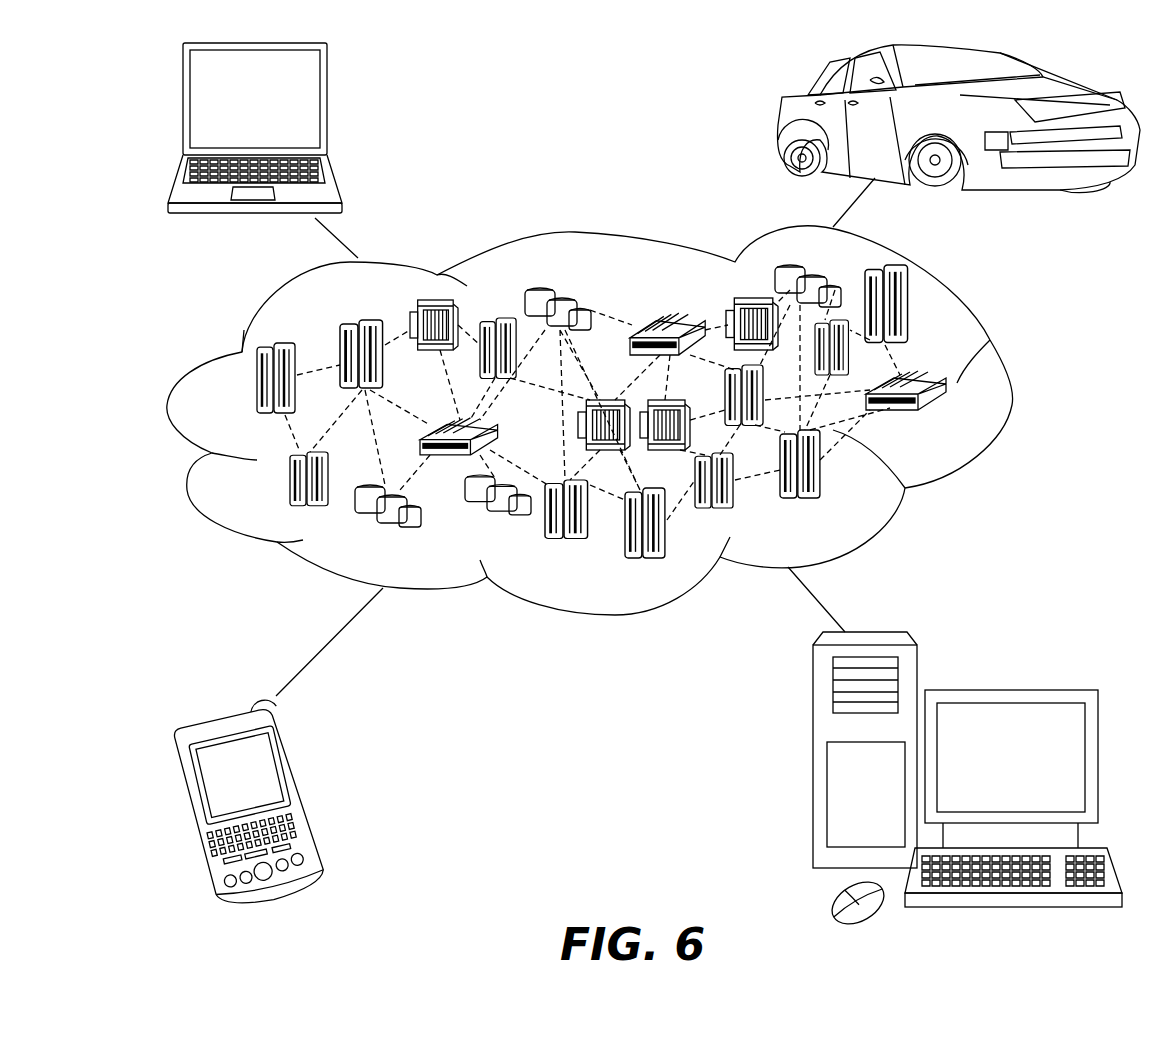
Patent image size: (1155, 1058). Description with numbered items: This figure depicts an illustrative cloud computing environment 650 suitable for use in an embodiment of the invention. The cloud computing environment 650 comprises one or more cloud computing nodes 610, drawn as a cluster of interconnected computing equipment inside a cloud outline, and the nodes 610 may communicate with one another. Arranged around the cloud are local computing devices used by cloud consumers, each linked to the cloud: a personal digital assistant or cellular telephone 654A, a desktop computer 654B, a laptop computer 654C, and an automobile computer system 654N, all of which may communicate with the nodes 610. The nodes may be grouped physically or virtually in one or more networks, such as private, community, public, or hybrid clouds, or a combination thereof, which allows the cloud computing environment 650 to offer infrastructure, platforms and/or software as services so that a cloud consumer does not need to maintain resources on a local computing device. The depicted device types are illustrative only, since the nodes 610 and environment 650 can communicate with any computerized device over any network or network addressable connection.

The cloud computing nodes 610 is at (952, 420).
The cloud computing environment 650 is at (998, 365).
The personal digital assistant (PDA) or cellular telephone 654A is at (315, 787).
The desktop computer 654B is at (1019, 668).
The laptop computer 654C is at (327, 107).
The automobile computer system 654N is at (780, 125).